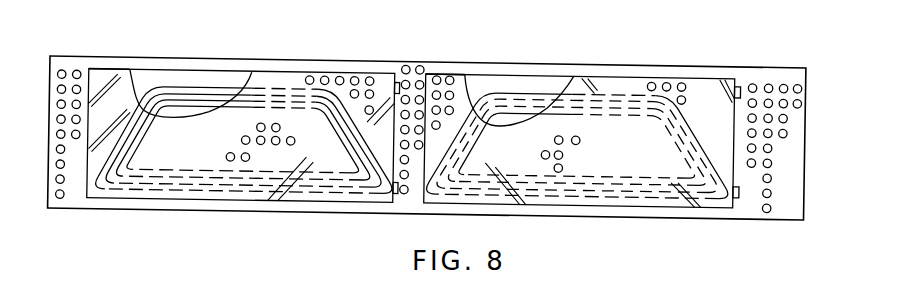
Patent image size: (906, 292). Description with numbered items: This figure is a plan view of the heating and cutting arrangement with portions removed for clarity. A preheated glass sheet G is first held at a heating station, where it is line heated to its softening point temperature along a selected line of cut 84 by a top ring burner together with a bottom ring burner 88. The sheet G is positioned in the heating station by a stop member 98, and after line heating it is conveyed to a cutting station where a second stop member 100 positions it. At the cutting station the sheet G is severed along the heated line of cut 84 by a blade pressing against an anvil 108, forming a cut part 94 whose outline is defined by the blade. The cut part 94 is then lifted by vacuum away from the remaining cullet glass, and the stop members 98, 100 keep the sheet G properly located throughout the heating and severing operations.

The line of cut 84 is at (257, 97).
The bottom ring burner 88 is at (173, 96).
The cut part 94 is at (601, 159).
The stop member 98 is at (396, 82).
The stop member 100 is at (741, 75).
The anvil 108 is at (492, 103).
The glass sheet G is at (112, 68).